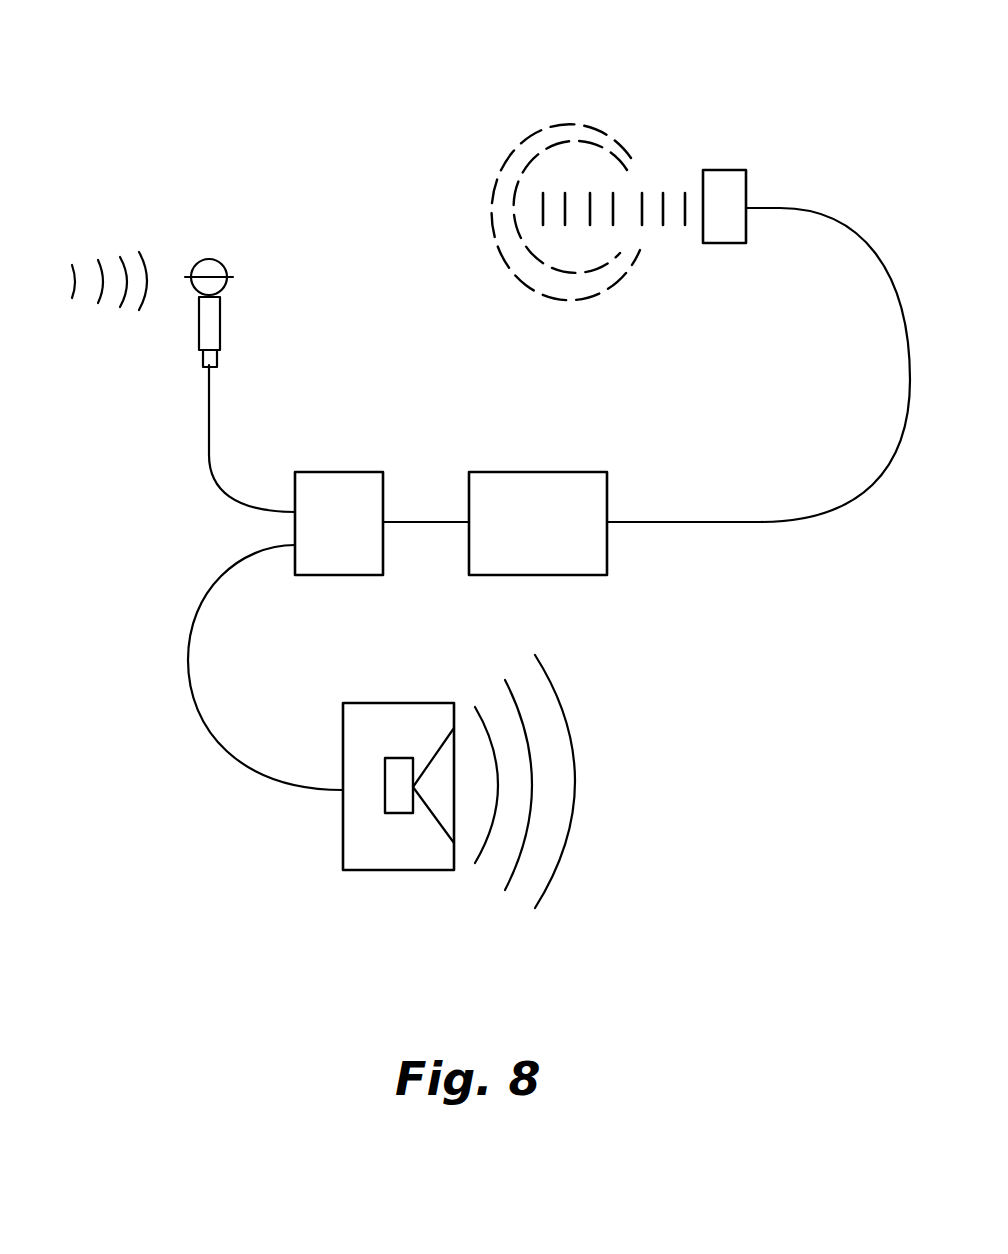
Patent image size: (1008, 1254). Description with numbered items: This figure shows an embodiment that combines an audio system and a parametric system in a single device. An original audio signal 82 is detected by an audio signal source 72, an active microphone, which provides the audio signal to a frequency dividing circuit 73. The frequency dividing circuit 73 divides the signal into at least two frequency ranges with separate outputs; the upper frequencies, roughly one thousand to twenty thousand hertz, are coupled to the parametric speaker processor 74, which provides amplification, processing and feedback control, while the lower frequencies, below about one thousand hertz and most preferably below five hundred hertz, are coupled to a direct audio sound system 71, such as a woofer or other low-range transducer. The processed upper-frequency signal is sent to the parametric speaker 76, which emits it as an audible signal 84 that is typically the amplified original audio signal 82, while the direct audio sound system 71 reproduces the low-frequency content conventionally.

The direct audio sound system 71 is at (383, 870).
The audio signal source 72 is at (220, 322).
The frequency dividing circuit 73 is at (333, 575).
The parametric speaker processor 74 is at (548, 472).
The parametric speaker 76 is at (723, 243).
The original audio signal 82 is at (100, 263).
The audible signal 84 is at (587, 118).